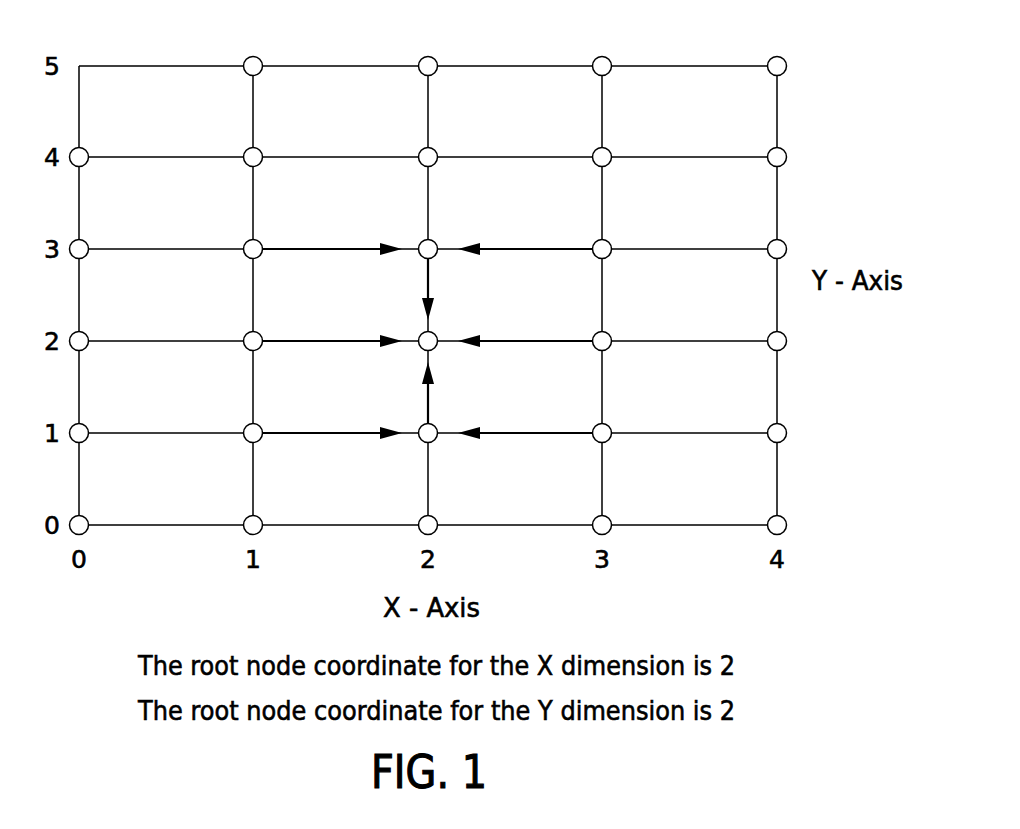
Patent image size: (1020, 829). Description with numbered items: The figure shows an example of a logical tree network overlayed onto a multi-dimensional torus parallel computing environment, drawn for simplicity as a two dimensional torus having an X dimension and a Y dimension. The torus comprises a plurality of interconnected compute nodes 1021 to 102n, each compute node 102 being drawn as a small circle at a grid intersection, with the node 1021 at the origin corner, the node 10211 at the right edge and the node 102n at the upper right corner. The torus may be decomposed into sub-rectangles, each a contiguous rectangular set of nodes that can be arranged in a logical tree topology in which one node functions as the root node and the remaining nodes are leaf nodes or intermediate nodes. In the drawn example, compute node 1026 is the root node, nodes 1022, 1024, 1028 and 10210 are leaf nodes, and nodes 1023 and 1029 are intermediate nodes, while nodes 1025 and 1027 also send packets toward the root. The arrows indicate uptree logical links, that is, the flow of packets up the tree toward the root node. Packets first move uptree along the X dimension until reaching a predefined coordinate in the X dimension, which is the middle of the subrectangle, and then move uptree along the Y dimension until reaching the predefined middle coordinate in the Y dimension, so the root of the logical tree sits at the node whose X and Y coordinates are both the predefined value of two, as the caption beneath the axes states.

The compute node 102 is at (476, 276).
The compute node 1021 is at (85, 517).
The leaf node 1022 is at (247, 426).
The intermediate node 1023 is at (422, 426).
The leaf node 1024 is at (597, 426).
The compute node 1025 is at (247, 334).
The root node 1026 is at (422, 334).
The compute node 1027 is at (597, 334).
The leaf node 1028 is at (247, 242).
The intermediate node 1029 is at (422, 242).
The leaf node 10210 is at (597, 242).
The compute node 10211 is at (783, 424).
The compute node 102n is at (783, 58).